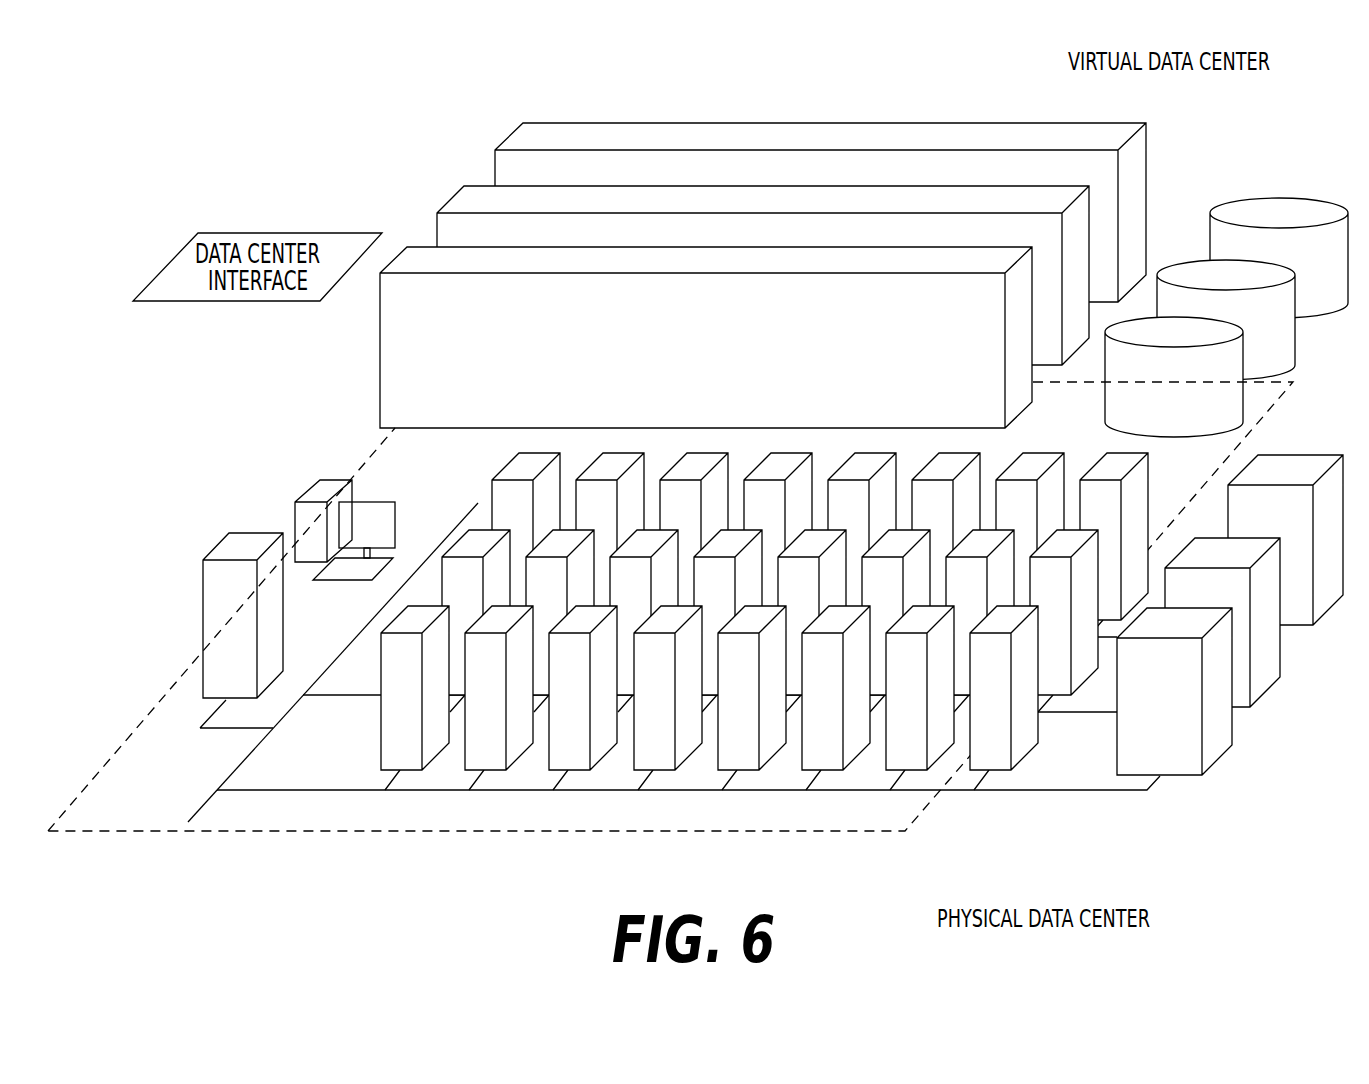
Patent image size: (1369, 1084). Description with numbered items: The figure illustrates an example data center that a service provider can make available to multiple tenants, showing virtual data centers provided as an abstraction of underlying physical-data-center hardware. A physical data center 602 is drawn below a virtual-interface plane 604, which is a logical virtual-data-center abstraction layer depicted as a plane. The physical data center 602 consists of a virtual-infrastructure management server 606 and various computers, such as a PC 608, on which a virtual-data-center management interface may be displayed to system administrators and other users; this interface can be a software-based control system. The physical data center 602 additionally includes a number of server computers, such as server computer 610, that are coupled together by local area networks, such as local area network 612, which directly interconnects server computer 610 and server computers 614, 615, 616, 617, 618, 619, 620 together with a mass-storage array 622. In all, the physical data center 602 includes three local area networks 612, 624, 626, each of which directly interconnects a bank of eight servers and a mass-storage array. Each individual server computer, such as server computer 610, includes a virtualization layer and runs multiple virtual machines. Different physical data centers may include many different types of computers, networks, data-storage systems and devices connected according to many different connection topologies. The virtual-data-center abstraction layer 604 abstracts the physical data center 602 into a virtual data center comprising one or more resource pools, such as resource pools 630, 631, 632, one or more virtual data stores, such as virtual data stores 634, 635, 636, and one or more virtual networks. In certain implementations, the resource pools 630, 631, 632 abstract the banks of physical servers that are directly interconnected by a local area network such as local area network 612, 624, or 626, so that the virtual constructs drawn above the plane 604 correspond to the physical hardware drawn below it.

The physical data center 602 is at (1305, 775).
The virtual-interface plane 604 is at (232, 833).
The virtual-infrastructure management server 606 is at (243, 531).
The PC 608 is at (313, 481).
The server computer 610 is at (392, 723).
The local area network 612 is at (300, 790).
The server computer 614 is at (498, 758).
The server computer 615 is at (578, 758).
The server computer 616 is at (670, 758).
The server computer 617 is at (750, 758).
The server computer 618 is at (835, 758).
The server computer 619 is at (918, 758).
The server computer 620 is at (1000, 768).
The mass-storage array 622 is at (1180, 768).
The local area network 624 is at (337, 694).
The local area network 626 is at (397, 591).
The resource pool 630 is at (420, 253).
The resource pool 631 is at (481, 195).
The resource pool 632 is at (542, 137).
The virtual data store 634 is at (1240, 405).
The virtual data store 635 is at (1288, 333).
The virtual data store 636 is at (1282, 201).